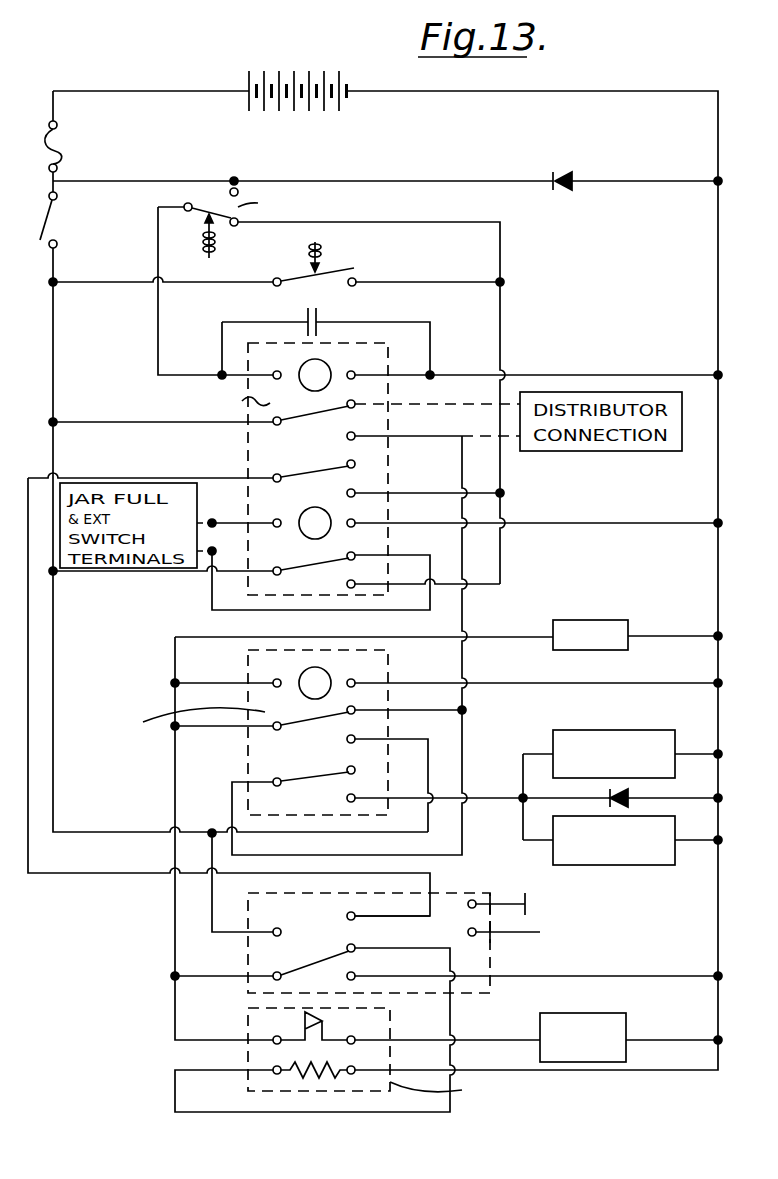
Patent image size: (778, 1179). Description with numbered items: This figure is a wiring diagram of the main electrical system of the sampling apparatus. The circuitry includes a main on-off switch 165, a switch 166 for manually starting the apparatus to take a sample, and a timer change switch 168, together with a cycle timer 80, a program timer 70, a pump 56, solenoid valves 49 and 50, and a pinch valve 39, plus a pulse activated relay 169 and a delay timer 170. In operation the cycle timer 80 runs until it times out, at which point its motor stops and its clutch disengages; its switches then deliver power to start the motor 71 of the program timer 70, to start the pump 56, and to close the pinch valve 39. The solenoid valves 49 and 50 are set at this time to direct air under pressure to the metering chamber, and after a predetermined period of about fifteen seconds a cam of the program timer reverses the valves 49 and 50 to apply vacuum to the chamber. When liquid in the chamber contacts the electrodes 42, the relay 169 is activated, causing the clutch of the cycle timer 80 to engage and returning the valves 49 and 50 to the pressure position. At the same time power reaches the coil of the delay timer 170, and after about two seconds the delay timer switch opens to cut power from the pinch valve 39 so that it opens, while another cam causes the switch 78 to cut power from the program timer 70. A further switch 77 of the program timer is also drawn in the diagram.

The main on-off switch 165 is at (50, 217).
The timer change switch 168 is at (232, 203).
The switch for manually starting the apparatus 166 is at (302, 272).
The cycle timer 80 is at (367, 362).
The program timer 70 is at (242, 732).
The motor of program timer 71 is at (328, 674).
The switch 78 is at (330, 721).
The program timer switch 77 is at (343, 778).
The pump 56 is at (600, 621).
The solenoid valve 49 is at (653, 733).
The solenoid valve 50 is at (653, 862).
The electrodes 42 is at (525, 893).
The pulse activated relay 169 is at (308, 973).
The pinch valve 39 is at (617, 1013).
The delay timer 170 is at (338, 1083).